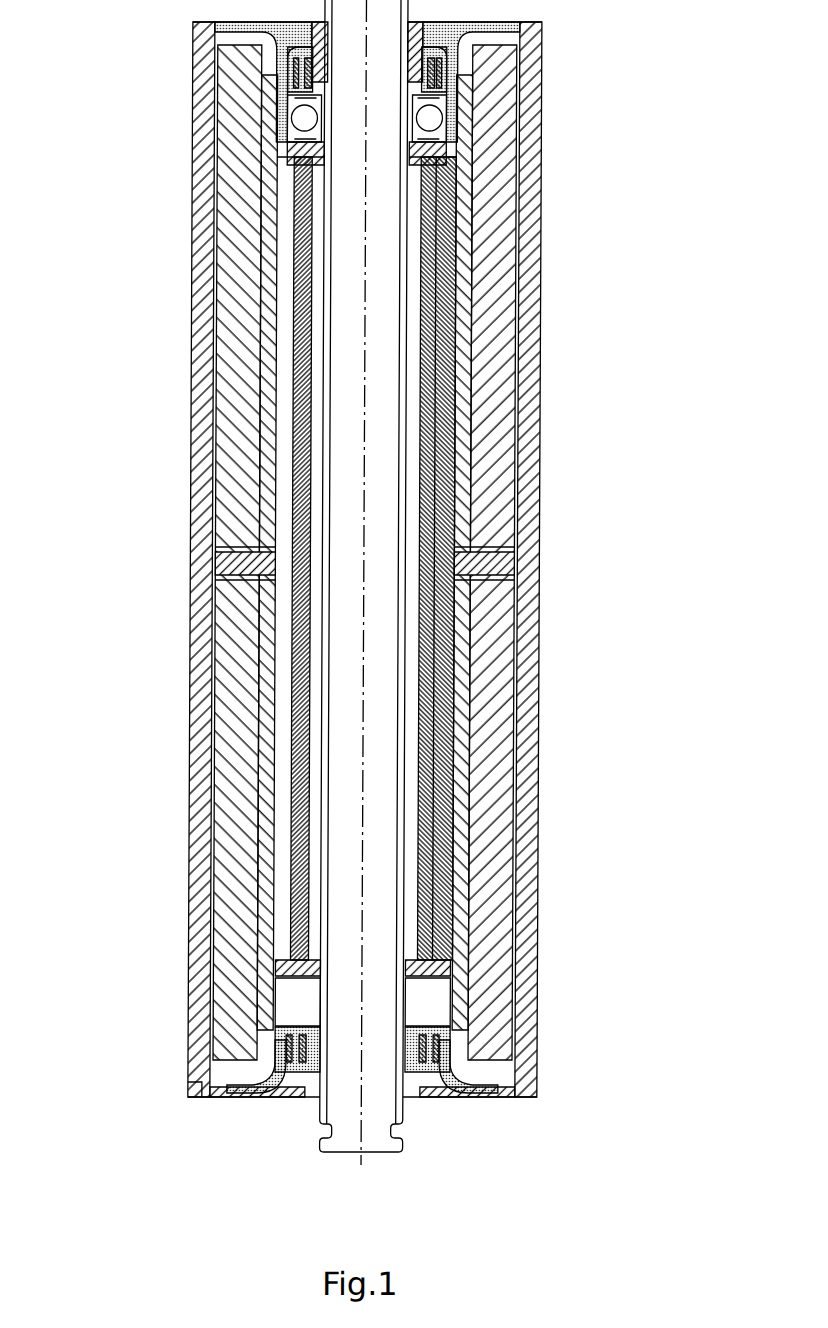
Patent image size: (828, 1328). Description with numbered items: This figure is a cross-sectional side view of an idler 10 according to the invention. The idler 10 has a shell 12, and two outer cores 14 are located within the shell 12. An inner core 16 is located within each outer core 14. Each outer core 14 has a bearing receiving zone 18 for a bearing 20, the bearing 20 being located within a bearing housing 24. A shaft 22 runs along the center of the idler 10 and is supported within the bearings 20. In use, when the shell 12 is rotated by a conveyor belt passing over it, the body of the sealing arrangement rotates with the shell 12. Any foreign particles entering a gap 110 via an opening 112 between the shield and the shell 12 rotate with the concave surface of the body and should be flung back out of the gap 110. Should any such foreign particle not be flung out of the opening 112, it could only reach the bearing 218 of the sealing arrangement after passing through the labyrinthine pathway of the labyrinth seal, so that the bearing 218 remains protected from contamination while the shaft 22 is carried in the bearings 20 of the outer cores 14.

The idler 10 is at (582, 477).
The shell 12 is at (190, 770).
The outer core 14 is at (272, 470).
The inner core 16 is at (458, 895).
The bearing receiving zone 18 is at (452, 1022).
The bearing 20 is at (432, 1005).
The shaft 22 is at (382, 801).
The bearing housing 24 is at (297, 1005).
The gap 110 is at (264, 1100).
The opening 112 is at (218, 1100).
The bearing 218 is at (432, 115).